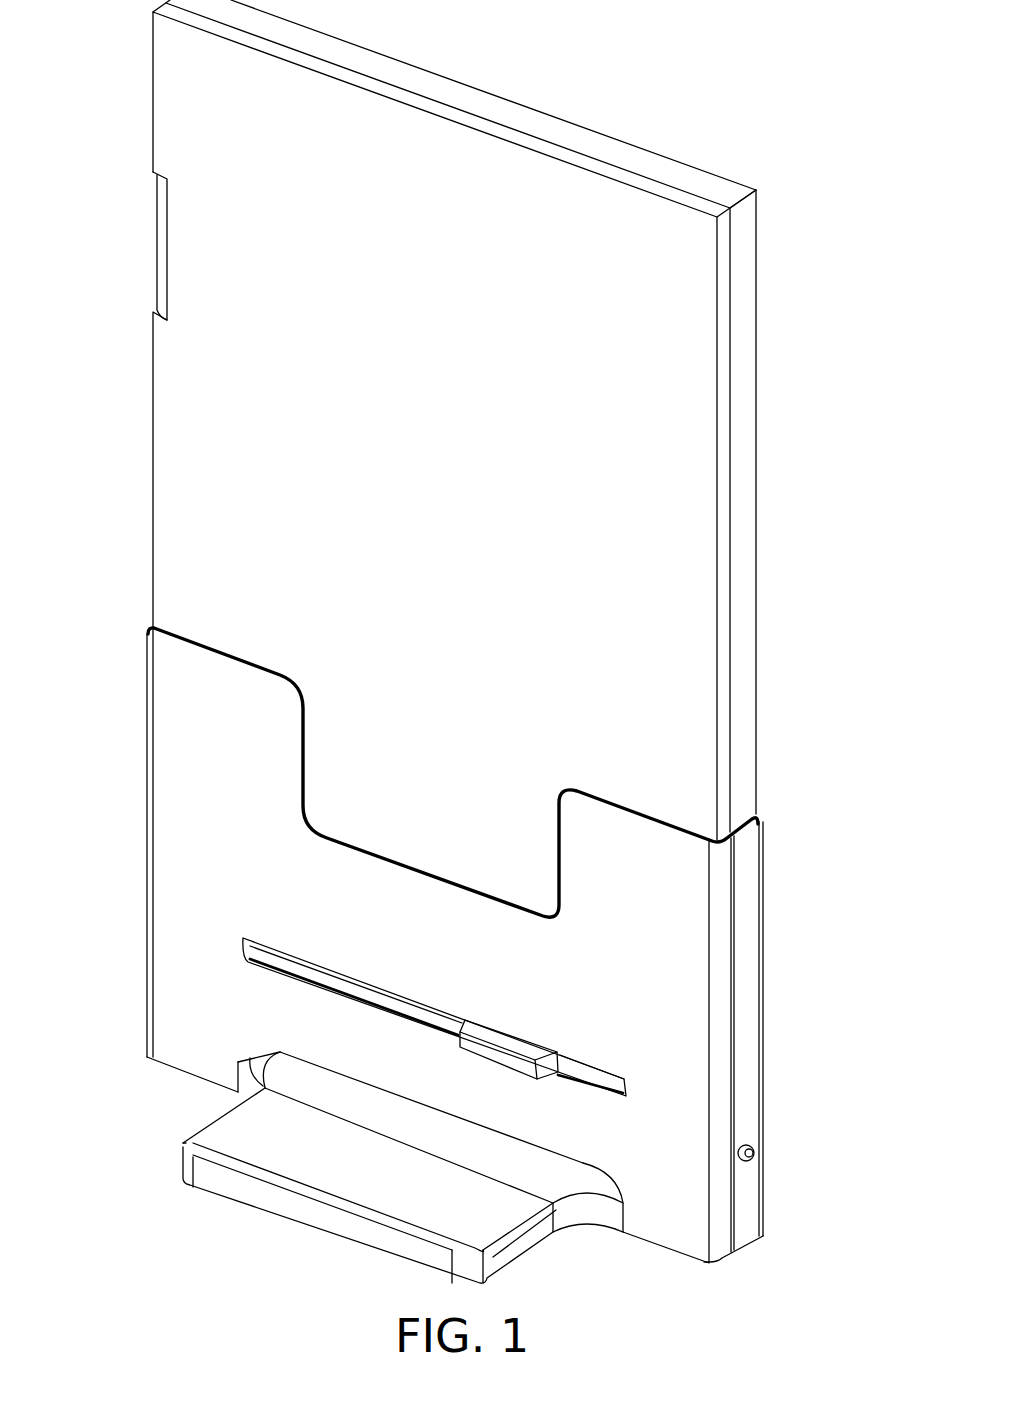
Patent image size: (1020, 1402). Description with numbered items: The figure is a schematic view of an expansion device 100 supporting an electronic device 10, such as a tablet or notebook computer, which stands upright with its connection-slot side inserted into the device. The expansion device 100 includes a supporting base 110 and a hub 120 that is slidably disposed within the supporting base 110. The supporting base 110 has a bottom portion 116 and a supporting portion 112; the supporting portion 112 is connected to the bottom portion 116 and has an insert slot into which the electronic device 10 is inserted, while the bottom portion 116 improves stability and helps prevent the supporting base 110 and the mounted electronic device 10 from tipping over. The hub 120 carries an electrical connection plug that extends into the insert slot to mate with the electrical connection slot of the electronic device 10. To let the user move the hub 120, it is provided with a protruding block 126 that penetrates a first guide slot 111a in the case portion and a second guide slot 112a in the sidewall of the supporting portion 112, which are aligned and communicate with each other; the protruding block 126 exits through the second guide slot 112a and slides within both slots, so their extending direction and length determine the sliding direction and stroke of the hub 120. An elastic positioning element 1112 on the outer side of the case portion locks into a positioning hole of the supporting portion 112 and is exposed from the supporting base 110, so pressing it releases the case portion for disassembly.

The electronic device 10 is at (737, 331).
The expansion device 100 is at (471, 938).
The supporting base 110 is at (471, 969).
The supporting portion 112 is at (650, 960).
The second guide slot 112a is at (258, 962).
The first guide slot 111a is at (622, 1082).
The elastic positioning element 1112 is at (754, 1153).
The bottom portion 116 is at (462, 1212).
The hub 120 is at (680, 1030).
The protruding block 126 is at (512, 1043).